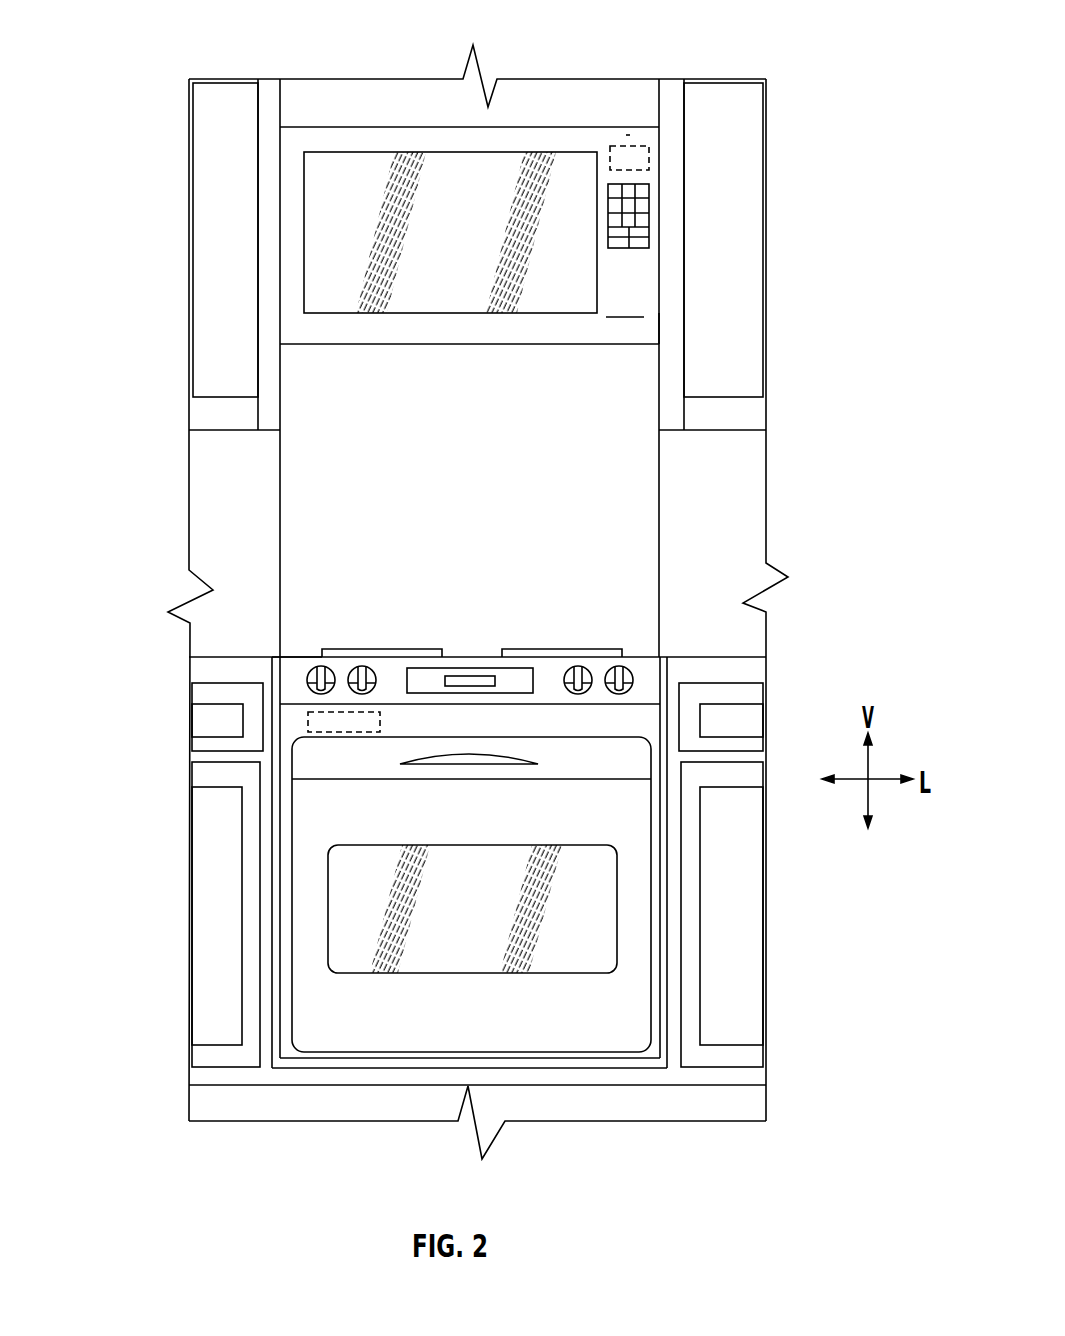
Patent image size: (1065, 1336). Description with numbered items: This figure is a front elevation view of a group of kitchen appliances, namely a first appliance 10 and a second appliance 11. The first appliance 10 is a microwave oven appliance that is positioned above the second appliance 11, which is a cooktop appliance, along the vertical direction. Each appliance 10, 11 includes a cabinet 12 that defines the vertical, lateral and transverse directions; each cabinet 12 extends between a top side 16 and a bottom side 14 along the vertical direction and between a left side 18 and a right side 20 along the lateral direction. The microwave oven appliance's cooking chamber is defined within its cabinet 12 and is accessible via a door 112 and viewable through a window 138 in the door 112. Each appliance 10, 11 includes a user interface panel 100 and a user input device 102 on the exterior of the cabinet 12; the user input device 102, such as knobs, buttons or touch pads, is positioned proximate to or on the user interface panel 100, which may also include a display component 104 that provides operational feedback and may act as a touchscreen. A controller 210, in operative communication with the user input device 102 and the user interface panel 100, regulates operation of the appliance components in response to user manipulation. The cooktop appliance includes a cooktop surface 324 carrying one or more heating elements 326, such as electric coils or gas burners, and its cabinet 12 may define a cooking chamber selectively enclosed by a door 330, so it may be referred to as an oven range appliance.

The first appliance 10 is at (136, 50).
The second appliance 11 is at (262, 850).
The cabinet 12 is at (645, 329).
The bottom side 14 is at (530, 345).
The top side 16 is at (384, 118).
The left side 18 is at (270, 264).
The right side 20 is at (670, 277).
The user interface panel 100 is at (640, 661).
The user input device 102 is at (651, 213).
The display component 104 is at (406, 668).
The door 112 is at (628, 135).
The window 138 is at (324, 220).
The controller 210 is at (649, 157).
The cooktop surface 324 is at (291, 648).
The heating elements 326 is at (518, 651).
The door 330 is at (640, 925).